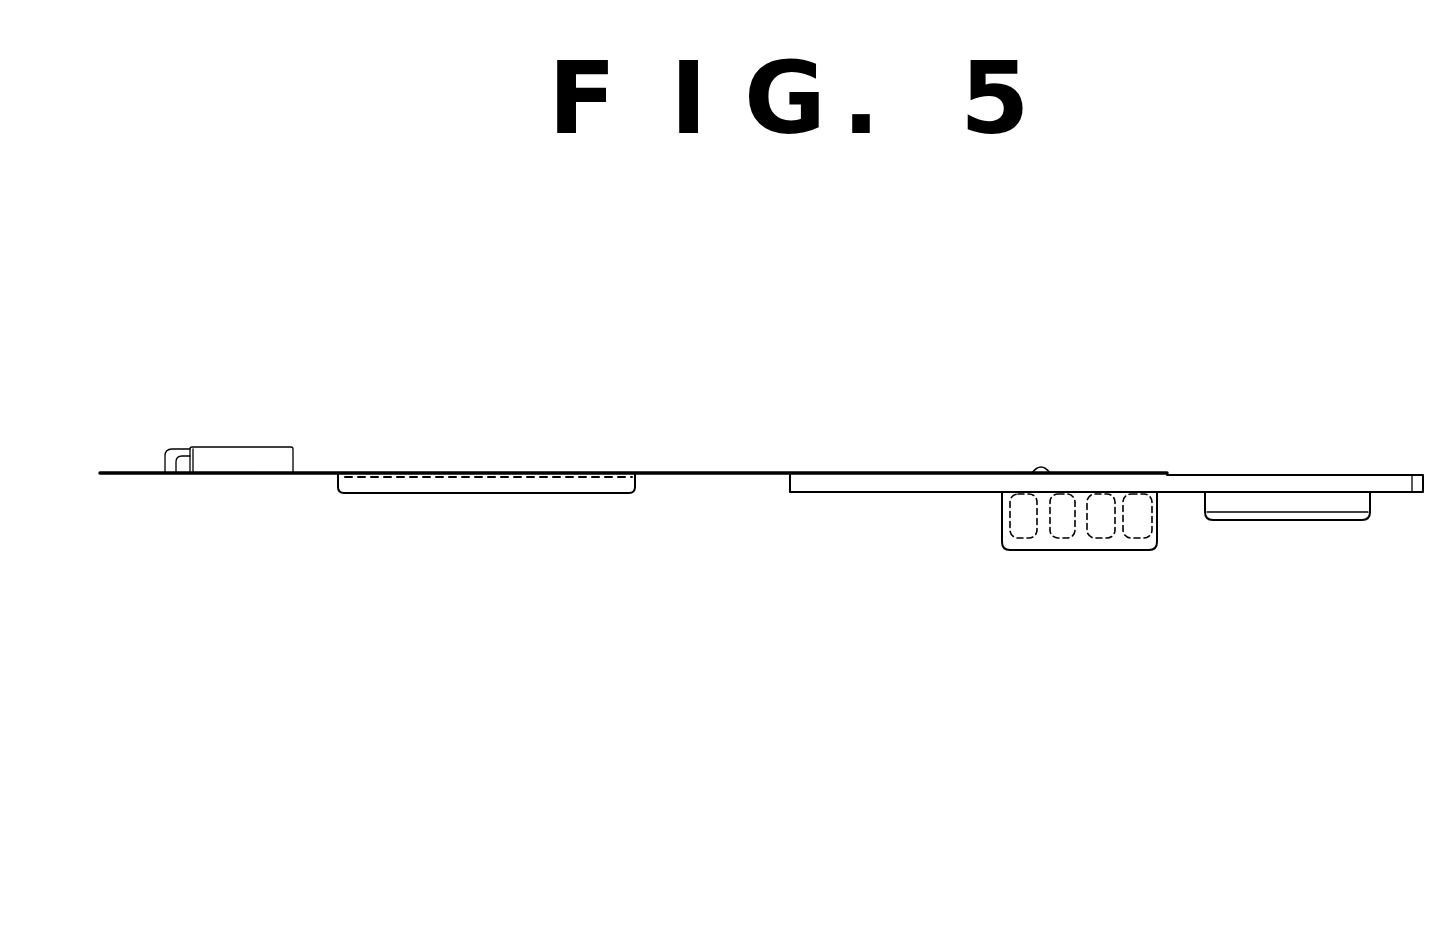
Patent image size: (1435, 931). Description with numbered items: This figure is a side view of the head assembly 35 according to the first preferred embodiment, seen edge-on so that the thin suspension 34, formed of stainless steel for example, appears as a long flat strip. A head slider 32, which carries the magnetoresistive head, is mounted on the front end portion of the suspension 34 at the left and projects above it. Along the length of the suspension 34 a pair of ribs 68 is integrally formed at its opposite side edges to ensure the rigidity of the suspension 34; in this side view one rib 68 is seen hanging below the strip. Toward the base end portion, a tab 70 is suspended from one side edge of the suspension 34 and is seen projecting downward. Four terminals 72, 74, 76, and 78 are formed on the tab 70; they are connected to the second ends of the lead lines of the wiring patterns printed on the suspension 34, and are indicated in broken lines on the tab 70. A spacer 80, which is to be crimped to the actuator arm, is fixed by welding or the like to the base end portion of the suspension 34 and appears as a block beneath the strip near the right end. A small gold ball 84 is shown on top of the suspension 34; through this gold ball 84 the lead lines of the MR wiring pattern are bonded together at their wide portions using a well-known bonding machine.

The head slider 32 is at (231, 447).
The suspension 34 is at (707, 476).
The head assembly 35 is at (783, 448).
The ribs 68 is at (467, 493).
The tab 70 is at (1002, 519).
The terminal 72 is at (1062, 540).
The terminal 74 is at (1020, 540).
The terminal 76 is at (1108, 542).
The terminal 78 is at (1152, 548).
The spacer 80 is at (1283, 480).
The gold ball 84 is at (1041, 464).